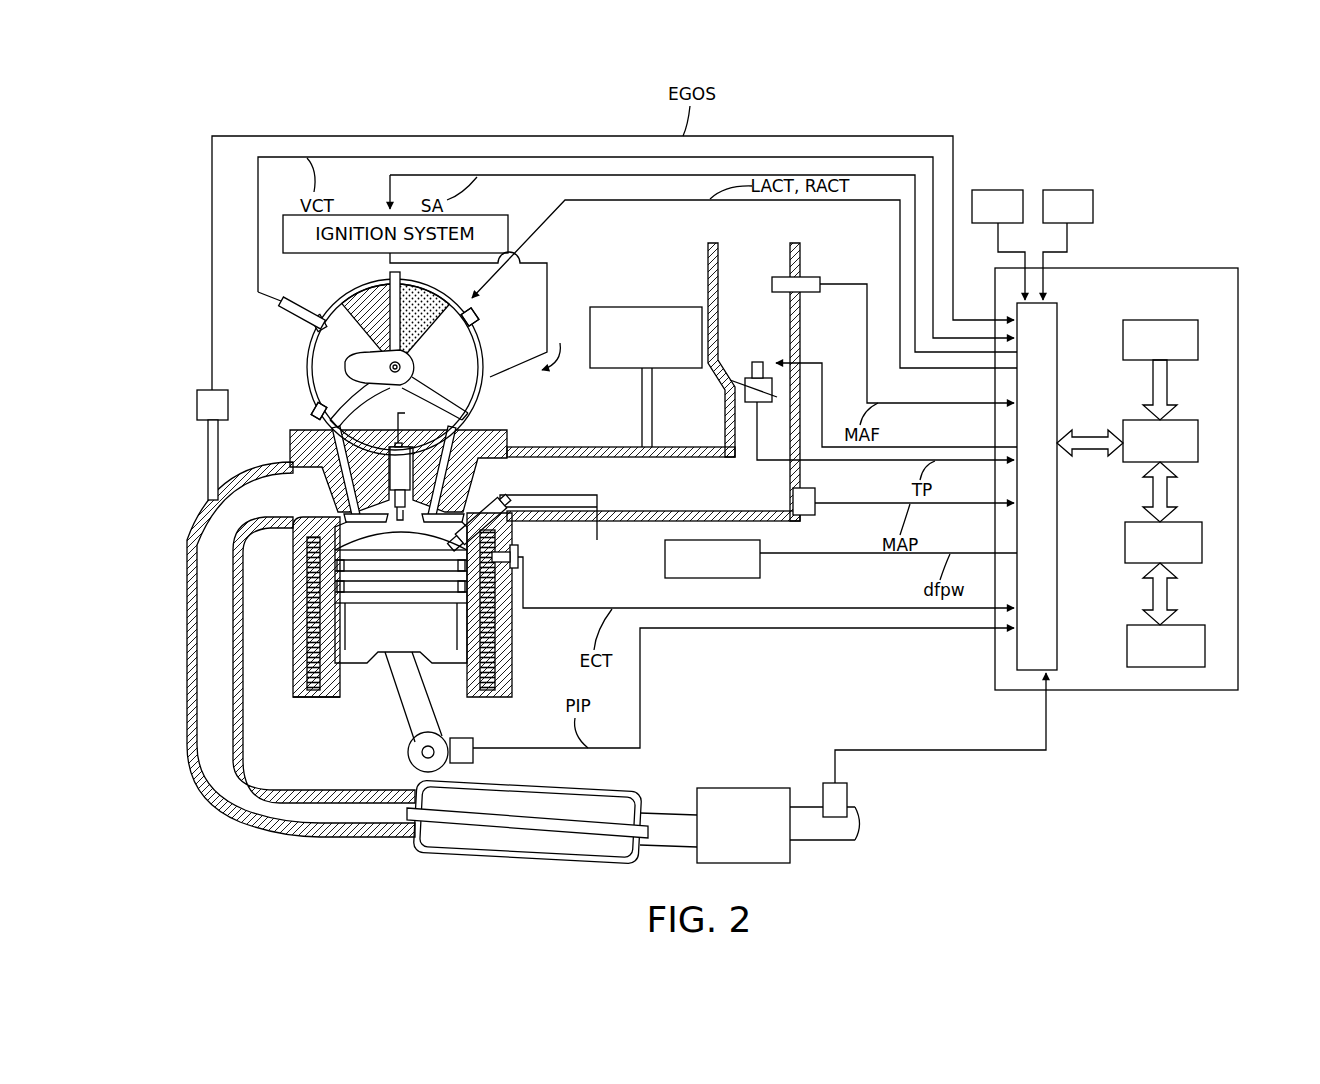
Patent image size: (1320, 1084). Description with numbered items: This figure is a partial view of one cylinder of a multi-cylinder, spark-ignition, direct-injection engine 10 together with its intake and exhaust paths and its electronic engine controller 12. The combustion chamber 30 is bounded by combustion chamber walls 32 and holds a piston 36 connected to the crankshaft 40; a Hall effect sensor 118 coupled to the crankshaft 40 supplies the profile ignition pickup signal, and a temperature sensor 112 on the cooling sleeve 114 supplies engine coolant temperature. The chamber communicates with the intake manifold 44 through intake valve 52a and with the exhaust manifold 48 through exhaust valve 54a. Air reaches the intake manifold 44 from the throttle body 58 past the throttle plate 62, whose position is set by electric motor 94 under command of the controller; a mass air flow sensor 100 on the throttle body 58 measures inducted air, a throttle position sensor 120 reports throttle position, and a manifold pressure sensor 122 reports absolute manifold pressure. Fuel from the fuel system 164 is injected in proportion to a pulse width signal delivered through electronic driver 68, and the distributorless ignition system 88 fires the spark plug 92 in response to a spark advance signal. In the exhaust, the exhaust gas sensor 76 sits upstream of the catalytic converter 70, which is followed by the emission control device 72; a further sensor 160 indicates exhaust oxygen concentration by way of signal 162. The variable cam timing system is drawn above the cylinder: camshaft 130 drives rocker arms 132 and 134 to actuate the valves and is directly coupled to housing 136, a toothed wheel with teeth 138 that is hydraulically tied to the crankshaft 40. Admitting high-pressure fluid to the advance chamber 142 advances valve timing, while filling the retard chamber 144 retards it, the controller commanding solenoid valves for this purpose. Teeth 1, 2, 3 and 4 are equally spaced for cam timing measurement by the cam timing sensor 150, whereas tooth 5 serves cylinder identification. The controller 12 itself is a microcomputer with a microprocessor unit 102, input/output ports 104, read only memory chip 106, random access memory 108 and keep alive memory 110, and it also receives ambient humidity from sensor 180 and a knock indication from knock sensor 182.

The tooth 1 is at (389, 279).
The tooth 2 is at (477, 327).
The tooth 3 is at (419, 456).
The tooth 4 is at (312, 407).
The tooth 5 is at (313, 329).
The engine 10 is at (556, 344).
The electronic engine controller 12 is at (1165, 268).
The combustion chamber 30 is at (313, 575).
The combustion chamber walls 32 is at (338, 699).
The piston 36 is at (390, 628).
The crankshaft 40 is at (417, 754).
The intake manifold 44 is at (670, 495).
The exhaust manifold 48 is at (203, 570).
The intake valve 52a is at (455, 500).
The exhaust valve 54a is at (352, 506).
The throttle body 58 is at (747, 427).
The throttle plate 62 is at (750, 378).
The electronic driver 68 is at (764, 547).
The catalytic converter 70 is at (632, 790).
The emission control device 72 is at (729, 788).
The exhaust gas sensor 76 is at (210, 390).
The distributorless ignition system 88 is at (517, 220).
The spark plug 92 is at (387, 460).
The electric motor 94 is at (762, 360).
The mass air flow sensor 100 is at (808, 277).
The microprocessor unit 102 is at (1190, 420).
The input/output ports 104 is at (1057, 328).
The read only memory chip 106 is at (1170, 319).
The random access memory 108 is at (1190, 522).
The keep alive memory 110 is at (1190, 625).
The temperature sensor 112 is at (522, 551).
The cooling sleeve 114 is at (488, 645).
The Hall effect sensor 118 is at (476, 745).
The throttle position sensor 120 is at (733, 385).
The manifold pressure sensor 122 is at (817, 494).
The camshaft 130 is at (363, 370).
The rocker arm 132 is at (325, 420).
The rocker arm 134 is at (472, 423).
The housing 136 is at (308, 377).
The teeth 138 is at (478, 313).
The advance chamber 142 is at (428, 300).
The retard chamber 144 is at (358, 305).
The cam timing sensor 150 is at (283, 313).
The sensor 160 is at (848, 795).
The signal 162 is at (1000, 751).
The fuel system 164 is at (663, 307).
The sensor 180 is at (984, 219).
The knock sensor 182 is at (1054, 219).